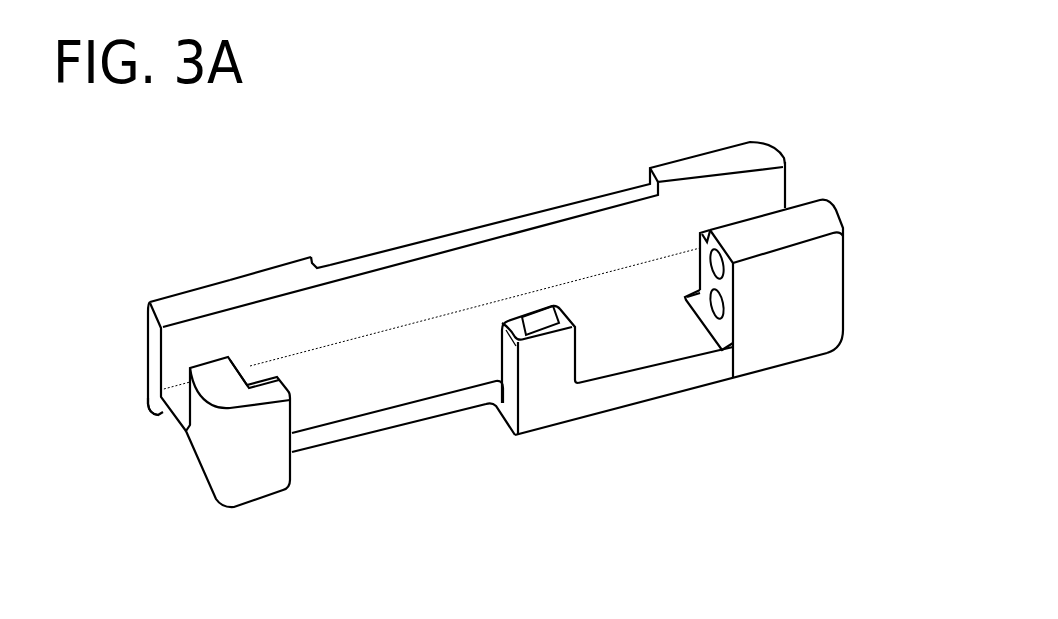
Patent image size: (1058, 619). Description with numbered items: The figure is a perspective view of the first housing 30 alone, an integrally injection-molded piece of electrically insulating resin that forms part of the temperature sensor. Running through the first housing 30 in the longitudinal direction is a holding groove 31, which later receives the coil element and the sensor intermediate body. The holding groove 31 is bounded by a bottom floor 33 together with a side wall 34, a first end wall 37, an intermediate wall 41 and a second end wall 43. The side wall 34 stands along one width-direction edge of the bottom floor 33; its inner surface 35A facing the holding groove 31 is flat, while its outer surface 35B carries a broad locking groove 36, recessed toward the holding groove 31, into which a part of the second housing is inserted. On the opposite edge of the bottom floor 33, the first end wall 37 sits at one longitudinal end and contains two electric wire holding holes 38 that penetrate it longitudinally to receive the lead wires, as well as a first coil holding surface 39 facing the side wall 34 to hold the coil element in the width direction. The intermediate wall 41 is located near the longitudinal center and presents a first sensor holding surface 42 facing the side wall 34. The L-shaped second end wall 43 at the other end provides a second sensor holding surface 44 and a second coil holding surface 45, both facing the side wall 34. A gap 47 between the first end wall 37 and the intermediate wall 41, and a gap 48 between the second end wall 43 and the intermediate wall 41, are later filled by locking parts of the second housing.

The first housing 30 is at (688, 148).
The holding groove 31 is at (402, 290).
The bottom floor 33 is at (412, 347).
The side wall 34 is at (300, 257).
The inner surface 35A is at (213, 330).
The outer surface 35B is at (272, 272).
The locking groove 36 is at (495, 223).
The first end wall 37 is at (843, 282).
The electric wire holding holes 38 is at (732, 277).
The first coil holding surface 39 is at (690, 240).
The intermediate wall 41 is at (580, 357).
The first sensor holding surface 42 is at (500, 348).
The second end wall 43 is at (275, 508).
The second sensor holding surface 44 is at (240, 375).
The second coil holding surface 45 is at (172, 398).
The gap 47 is at (668, 342).
The gap 48 is at (377, 442).